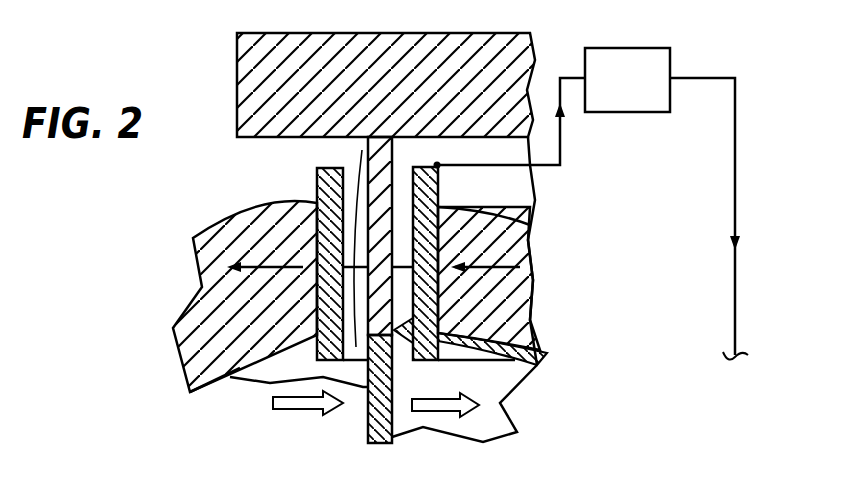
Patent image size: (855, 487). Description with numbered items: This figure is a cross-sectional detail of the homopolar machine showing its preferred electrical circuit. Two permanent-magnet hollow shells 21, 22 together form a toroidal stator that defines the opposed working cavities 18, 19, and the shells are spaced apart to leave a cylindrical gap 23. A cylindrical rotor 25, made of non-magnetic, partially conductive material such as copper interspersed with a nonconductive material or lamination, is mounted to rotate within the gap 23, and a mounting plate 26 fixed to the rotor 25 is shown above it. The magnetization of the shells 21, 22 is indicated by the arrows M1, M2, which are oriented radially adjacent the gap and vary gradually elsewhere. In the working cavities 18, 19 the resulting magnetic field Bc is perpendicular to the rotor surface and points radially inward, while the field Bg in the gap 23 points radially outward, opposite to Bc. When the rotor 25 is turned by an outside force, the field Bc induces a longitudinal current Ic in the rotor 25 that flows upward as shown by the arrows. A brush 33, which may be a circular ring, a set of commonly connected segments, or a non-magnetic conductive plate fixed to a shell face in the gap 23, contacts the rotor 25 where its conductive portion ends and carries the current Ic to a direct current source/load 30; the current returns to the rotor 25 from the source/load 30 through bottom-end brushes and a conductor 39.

The cavity 18 is at (230, 378).
The cavity 19 is at (490, 430).
The hollow shell 21 is at (196, 248).
The hollow shell 22 is at (517, 305).
The cylindrical gap 23 is at (317, 188).
The cylindrical rotor 25 is at (366, 426).
The mounting plate 26 is at (513, 50).
The source/load 30 is at (650, 47).
The brush 33 is at (543, 351).
The conductor 39 is at (738, 312).
The magnetization of shell 21 M1 is at (255, 268).
The magnetization of shell 22 M2 is at (498, 268).
The gap magnetic field Bg is at (362, 159).
The working cavity magnetic field Bc is at (273, 401).
The induced current Ic is at (386, 418).